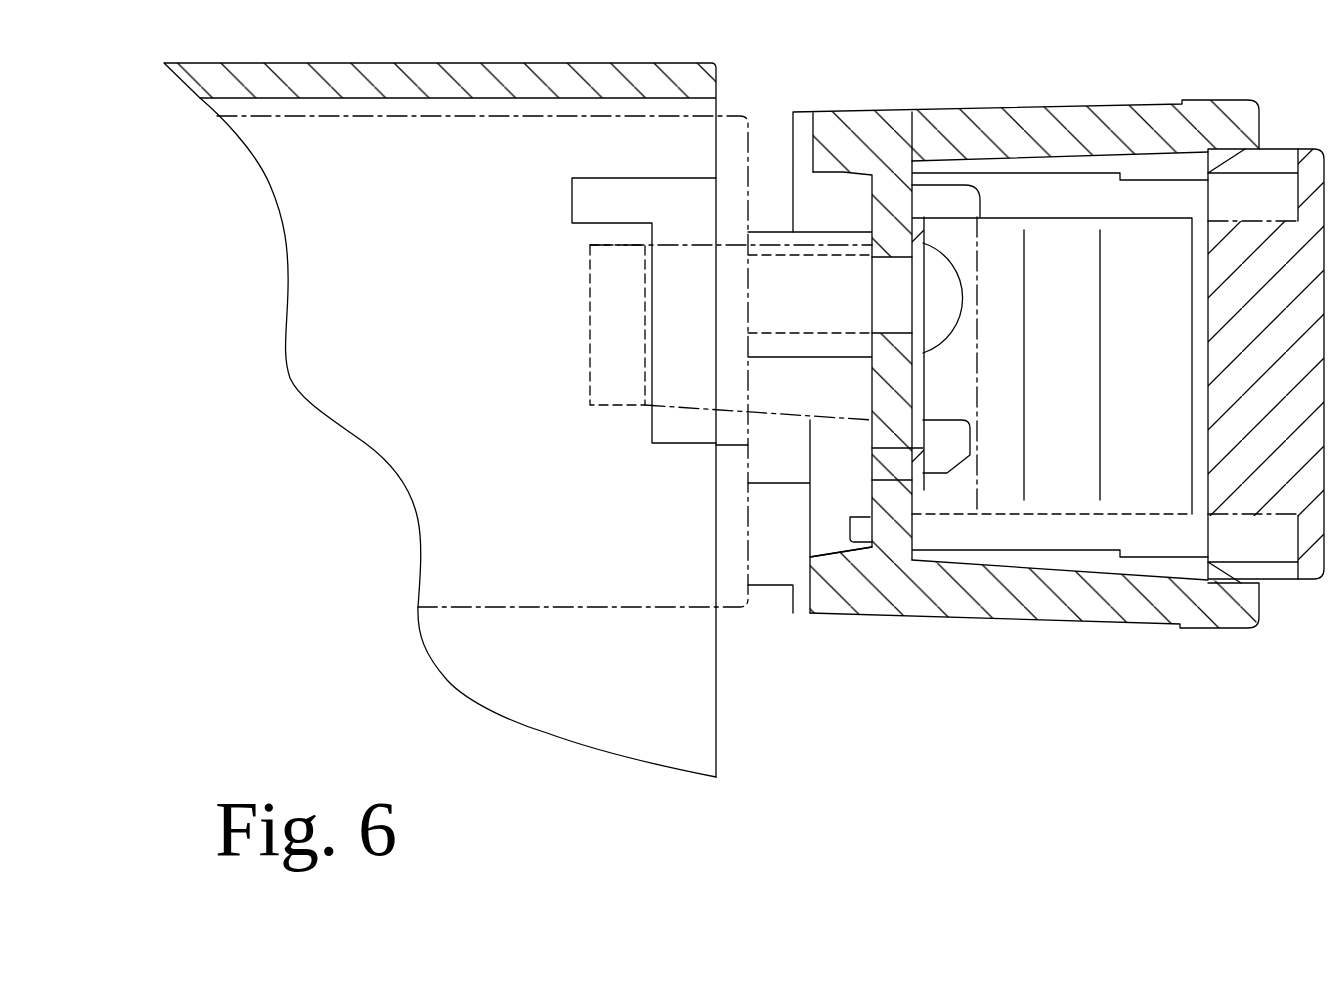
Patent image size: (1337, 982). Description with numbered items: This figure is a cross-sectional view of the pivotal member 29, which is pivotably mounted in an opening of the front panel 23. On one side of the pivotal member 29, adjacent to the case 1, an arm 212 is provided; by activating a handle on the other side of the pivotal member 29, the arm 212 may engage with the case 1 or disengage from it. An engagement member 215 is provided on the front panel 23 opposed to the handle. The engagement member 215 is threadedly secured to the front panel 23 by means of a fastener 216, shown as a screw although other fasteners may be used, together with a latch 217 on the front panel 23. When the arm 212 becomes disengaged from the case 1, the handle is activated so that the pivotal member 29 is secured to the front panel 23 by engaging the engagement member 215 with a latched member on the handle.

The case 1 is at (600, 678).
The arm 212 is at (628, 352).
The front panel 23 is at (1088, 138).
The engagement member 215 is at (1003, 460).
The fastener 216 is at (935, 287).
The latch 217 is at (940, 465).
The pivotal member 29 is at (1097, 530).